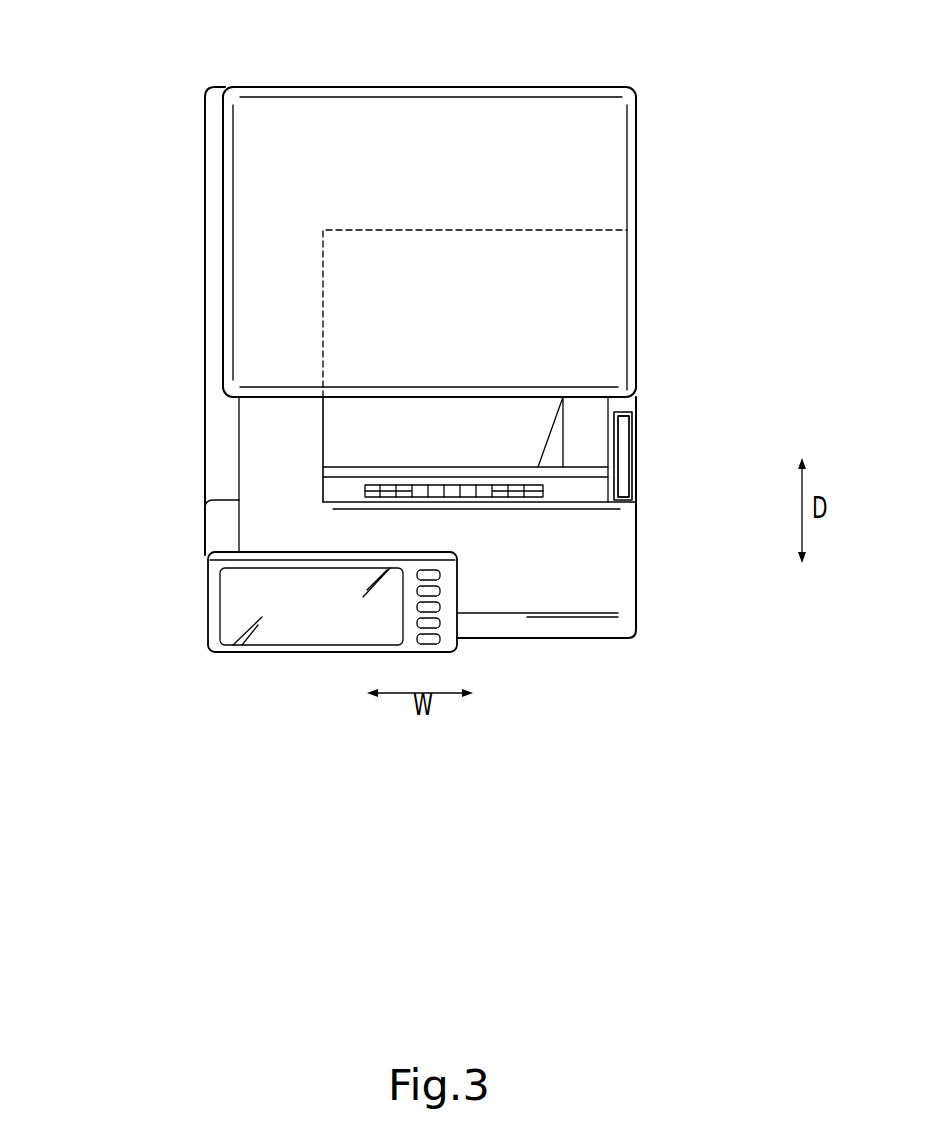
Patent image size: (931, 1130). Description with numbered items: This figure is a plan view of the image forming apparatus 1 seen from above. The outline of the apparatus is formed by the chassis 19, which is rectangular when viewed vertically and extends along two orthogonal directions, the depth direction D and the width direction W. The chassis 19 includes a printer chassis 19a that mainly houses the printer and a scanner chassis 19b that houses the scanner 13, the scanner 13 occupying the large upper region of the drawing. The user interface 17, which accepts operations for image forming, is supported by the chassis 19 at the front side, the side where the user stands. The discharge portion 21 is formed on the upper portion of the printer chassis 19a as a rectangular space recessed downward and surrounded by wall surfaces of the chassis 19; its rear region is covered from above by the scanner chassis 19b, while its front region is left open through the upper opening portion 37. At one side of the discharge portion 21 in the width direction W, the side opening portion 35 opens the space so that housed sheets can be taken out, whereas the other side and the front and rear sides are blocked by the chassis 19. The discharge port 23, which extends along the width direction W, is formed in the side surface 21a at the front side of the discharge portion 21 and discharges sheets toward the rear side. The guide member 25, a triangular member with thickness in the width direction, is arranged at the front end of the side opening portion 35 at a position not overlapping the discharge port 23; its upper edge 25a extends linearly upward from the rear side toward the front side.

The image forming apparatus 1 is at (643, 56).
The scanner 13 is at (468, 125).
The user interface 17 is at (243, 602).
The chassis 19 is at (342, 321).
The printer chassis 19a is at (206, 482).
The scanner chassis 19b is at (222, 306).
The discharge portion 21 is at (447, 438).
The side surface 21a is at (588, 488).
The discharge port 23 is at (461, 491).
The guide member 25 is at (623, 456).
The upper edge 25a is at (628, 470).
The side opening portion 35 is at (633, 411).
The upper opening portion 37 is at (323, 458).